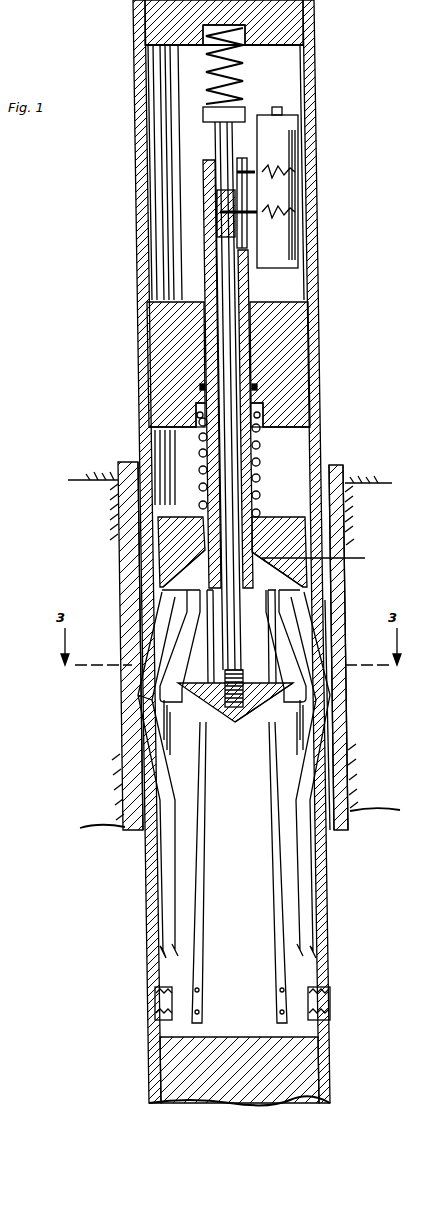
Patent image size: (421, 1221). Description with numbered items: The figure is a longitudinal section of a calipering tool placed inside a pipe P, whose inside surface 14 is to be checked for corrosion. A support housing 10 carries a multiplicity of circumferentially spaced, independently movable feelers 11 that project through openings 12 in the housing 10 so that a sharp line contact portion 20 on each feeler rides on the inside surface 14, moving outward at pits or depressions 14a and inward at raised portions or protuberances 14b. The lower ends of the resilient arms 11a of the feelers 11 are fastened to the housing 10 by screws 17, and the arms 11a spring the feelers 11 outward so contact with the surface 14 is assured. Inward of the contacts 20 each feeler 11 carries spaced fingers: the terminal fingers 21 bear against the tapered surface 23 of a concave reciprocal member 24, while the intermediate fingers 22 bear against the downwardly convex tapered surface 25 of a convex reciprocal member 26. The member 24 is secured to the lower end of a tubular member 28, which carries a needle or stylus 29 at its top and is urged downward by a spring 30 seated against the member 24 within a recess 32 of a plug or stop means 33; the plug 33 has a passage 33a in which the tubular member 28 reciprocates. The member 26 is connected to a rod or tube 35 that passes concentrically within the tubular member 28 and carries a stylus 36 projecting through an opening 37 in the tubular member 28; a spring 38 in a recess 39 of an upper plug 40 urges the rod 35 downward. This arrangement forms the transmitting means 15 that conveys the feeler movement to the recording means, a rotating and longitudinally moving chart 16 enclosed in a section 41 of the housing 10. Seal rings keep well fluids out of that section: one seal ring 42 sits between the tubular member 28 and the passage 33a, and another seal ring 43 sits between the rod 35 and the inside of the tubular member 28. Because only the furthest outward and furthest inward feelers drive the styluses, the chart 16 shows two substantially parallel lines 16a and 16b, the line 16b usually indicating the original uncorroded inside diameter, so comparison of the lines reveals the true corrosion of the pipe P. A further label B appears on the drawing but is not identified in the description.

The support housing 10 is at (152, 893).
The feelers 11 is at (195, 780).
The arms 11a is at (206, 903).
The openings 12 is at (322, 746).
The inside surface 14 is at (136, 757).
The pits or depressions 14a is at (346, 690).
The raised portions or protuberances 14b is at (143, 695).
The transmitting means 15 is at (267, 508).
The recording means or chart 16 is at (280, 130).
The line on chart 16a is at (275, 176).
The line on chart 16b is at (272, 232).
The screws 17 is at (158, 993).
The contact portion 20 is at (145, 700).
The terminal fingers 21 is at (189, 603).
The intermediate fingers 22 is at (207, 715).
The tapered surface 23 is at (213, 608).
The concave reciprocal member 24 is at (282, 513).
The downwardly convex tapered surface 25 is at (256, 718).
The convex reciprocal member 26 is at (255, 682).
The tubular member 28 is at (262, 441).
The needle or stylus 29 is at (245, 170).
The spring 30 is at (262, 462).
The recess 32 is at (262, 415).
The plug or stop means 33 is at (311, 368).
The passage 33a is at (205, 302).
The rod or tube 35 is at (242, 638).
The stylus 36 is at (248, 215).
The opening 37 is at (248, 198).
The spring 38 is at (207, 78).
The recess 39 is at (240, 40).
The plug 40 is at (296, 26).
The section 41 is at (300, 288).
The seal ring 42 is at (200, 388).
The seal ring 43 is at (233, 568).
The bore B is at (323, 561).
The pipe P is at (346, 732).